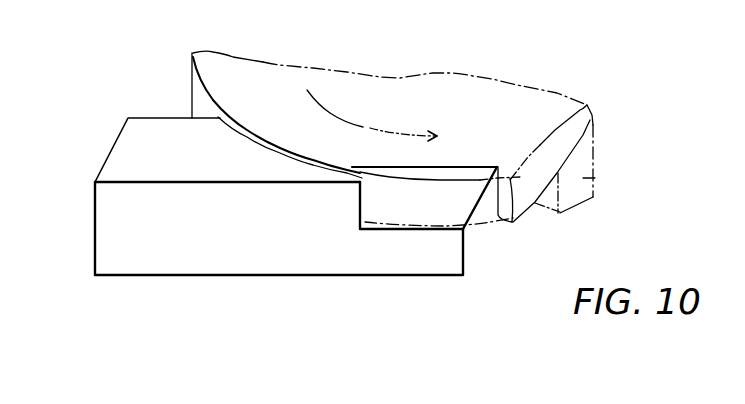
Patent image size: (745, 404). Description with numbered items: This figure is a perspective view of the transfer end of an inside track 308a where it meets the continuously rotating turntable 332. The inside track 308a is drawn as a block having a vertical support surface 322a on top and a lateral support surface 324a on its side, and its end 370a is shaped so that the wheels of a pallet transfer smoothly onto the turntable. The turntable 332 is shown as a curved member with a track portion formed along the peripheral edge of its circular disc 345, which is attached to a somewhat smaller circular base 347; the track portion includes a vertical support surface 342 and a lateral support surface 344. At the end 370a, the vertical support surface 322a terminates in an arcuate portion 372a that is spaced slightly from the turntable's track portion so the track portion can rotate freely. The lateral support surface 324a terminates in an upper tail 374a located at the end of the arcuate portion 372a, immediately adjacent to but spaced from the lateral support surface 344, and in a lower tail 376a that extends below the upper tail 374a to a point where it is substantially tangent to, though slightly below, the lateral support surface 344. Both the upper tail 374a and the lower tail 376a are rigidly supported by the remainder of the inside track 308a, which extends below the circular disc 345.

The inside track 308a is at (268, 232).
The vertical support surface 322a is at (115, 167).
The lateral support surface 324a is at (110, 229).
The end 370a is at (395, 256).
The arcuate portion 372a is at (270, 150).
The upper tail 374a is at (358, 201).
The lower tail 376a is at (500, 218).
The turntable 332 is at (401, 119).
The vertical support surface 342 is at (237, 67).
The lateral support surface 344 is at (200, 100).
The circular disc 345 is at (583, 123).
The circular base 347 is at (592, 178).